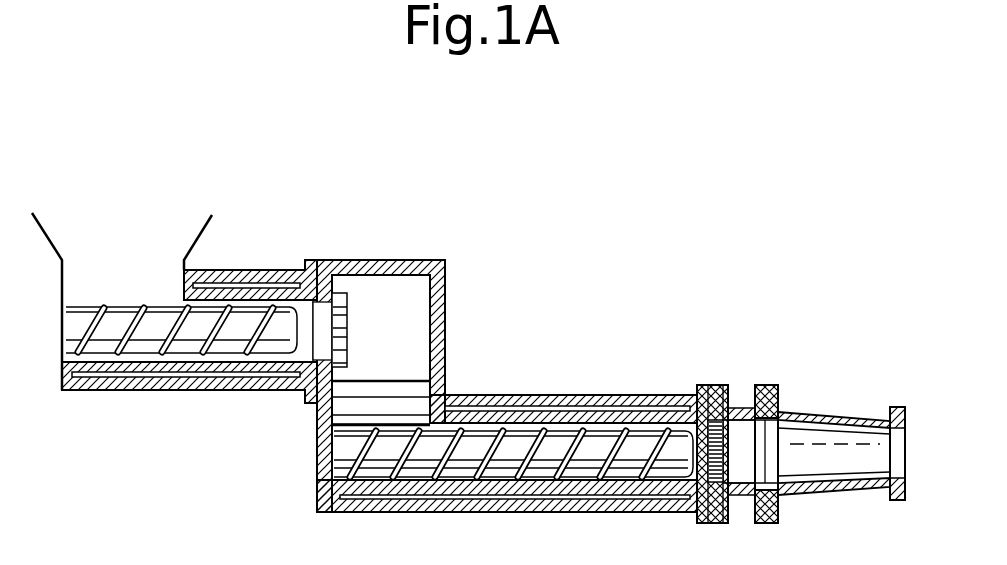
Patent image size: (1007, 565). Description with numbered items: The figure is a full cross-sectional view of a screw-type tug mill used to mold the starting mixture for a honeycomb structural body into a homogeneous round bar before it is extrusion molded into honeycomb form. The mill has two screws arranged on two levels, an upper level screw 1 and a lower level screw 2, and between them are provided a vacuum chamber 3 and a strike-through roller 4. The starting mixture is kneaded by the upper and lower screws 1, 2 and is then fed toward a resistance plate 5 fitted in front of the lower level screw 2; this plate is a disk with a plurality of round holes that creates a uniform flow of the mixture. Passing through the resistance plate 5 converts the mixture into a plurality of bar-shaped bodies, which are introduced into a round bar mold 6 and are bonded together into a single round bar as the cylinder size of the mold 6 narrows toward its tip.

The upper level screw 1 is at (158, 325).
The lower level screw 2 is at (552, 447).
The vacuum chamber 3 is at (367, 300).
The strike-through roller 4 is at (395, 393).
The resistance plate 5 is at (690, 450).
The round bar mold 6 is at (815, 420).